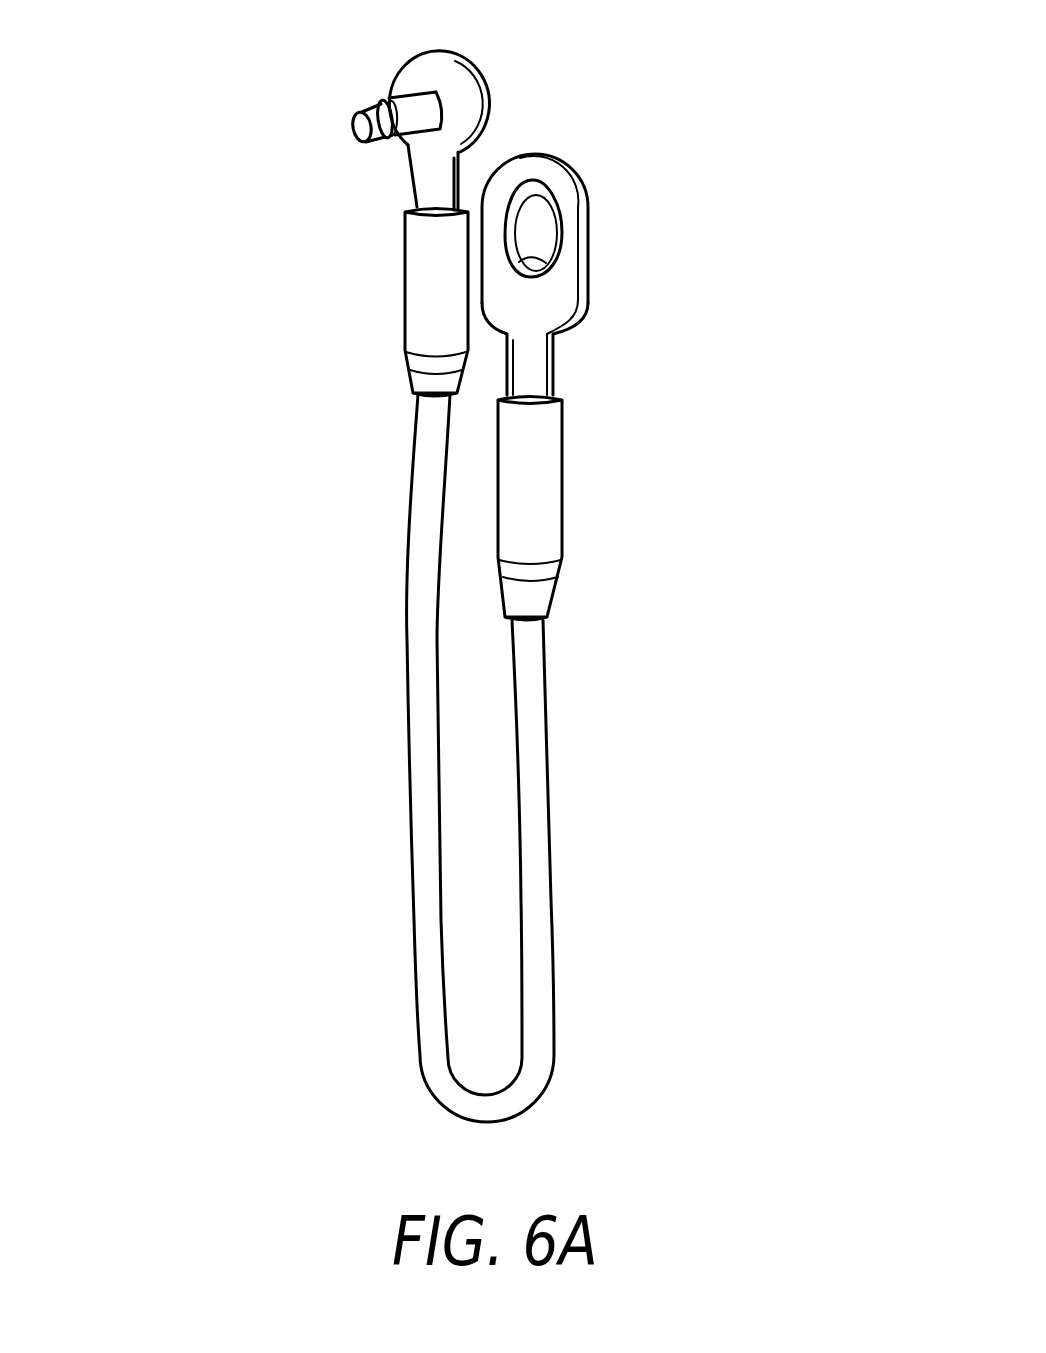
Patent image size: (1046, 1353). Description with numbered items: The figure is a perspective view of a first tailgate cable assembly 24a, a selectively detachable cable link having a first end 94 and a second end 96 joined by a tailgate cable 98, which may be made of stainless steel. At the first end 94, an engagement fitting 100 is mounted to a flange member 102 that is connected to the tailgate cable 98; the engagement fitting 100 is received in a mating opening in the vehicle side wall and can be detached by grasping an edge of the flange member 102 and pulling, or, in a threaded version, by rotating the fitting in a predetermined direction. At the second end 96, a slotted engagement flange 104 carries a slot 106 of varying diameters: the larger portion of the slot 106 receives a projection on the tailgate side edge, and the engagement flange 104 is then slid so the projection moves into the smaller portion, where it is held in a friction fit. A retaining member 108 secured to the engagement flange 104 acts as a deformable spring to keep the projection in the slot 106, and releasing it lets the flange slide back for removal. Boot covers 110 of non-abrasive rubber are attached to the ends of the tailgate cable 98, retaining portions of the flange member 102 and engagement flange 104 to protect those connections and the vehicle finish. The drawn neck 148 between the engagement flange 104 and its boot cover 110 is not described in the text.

The first tailgate cable assembly 24a is at (250, 570).
The first end 94 is at (392, 160).
The second end 96 is at (630, 287).
The tailgate cable 98 is at (542, 755).
The engagement fitting 100 is at (347, 127).
The flange member 102 is at (437, 73).
The engagement flange 104 is at (547, 178).
The slot 106 is at (575, 242).
The retaining member 108 is at (522, 250).
The boot covers 110 is at (423, 278).
The neck 148 is at (553, 363).